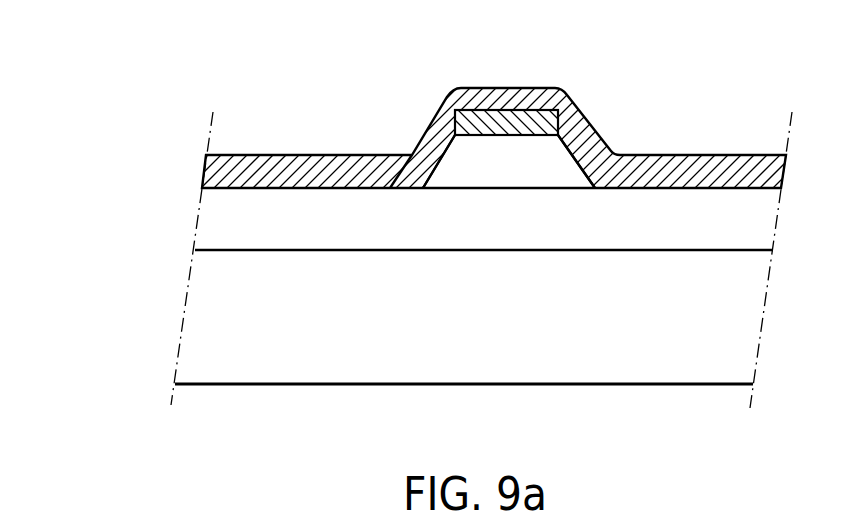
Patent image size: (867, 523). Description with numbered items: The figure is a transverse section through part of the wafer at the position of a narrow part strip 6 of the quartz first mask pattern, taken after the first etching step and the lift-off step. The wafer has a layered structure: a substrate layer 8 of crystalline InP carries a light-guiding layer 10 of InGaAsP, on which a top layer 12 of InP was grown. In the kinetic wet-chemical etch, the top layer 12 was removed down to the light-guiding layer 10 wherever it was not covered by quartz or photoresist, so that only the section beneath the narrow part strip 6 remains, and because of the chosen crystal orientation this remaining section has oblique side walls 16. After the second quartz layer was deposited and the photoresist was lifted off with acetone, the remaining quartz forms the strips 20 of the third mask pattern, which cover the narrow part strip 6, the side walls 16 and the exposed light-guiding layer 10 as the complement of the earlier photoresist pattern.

The narrow part strip 6 is at (562, 88).
The substrate layer 8 is at (238, 283).
The light-guiding layer 10 is at (245, 222).
The top layer 12 is at (450, 172).
The oblique side walls 16 is at (425, 130).
The strips 20 is at (485, 95).